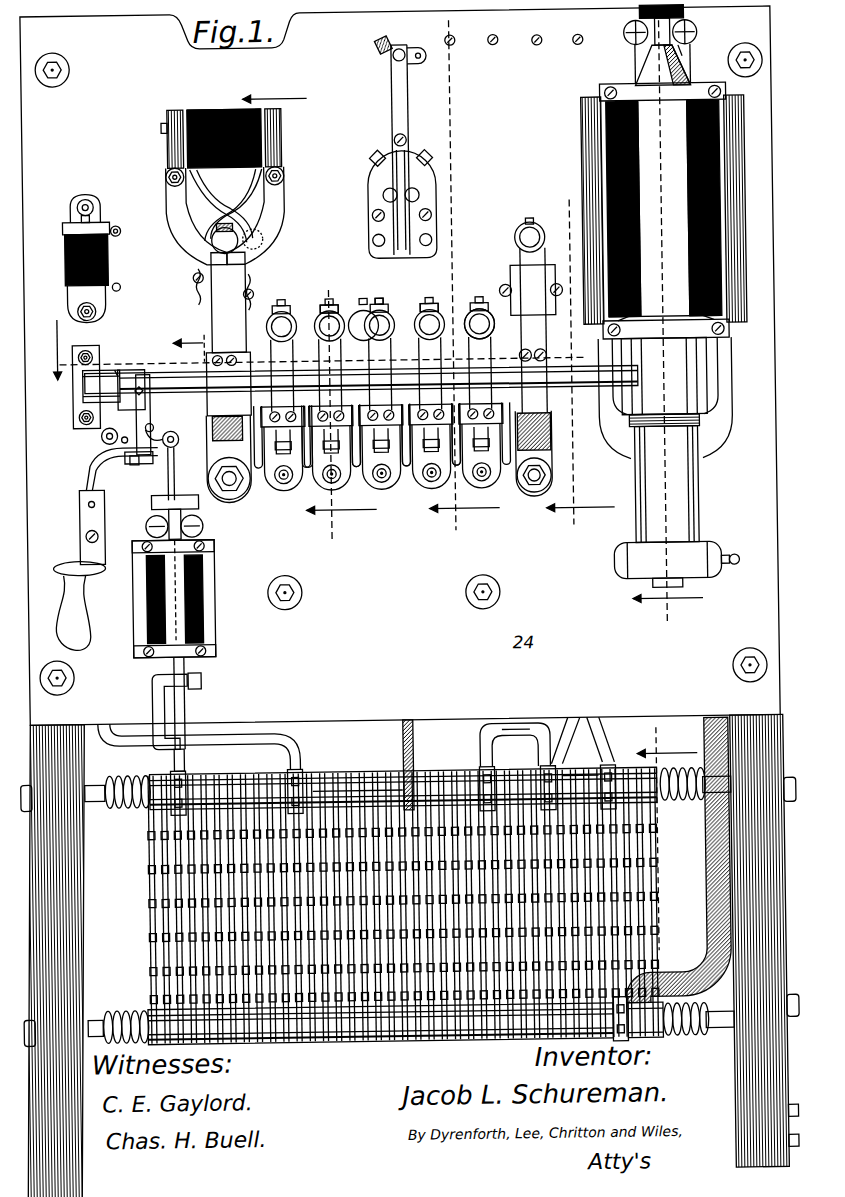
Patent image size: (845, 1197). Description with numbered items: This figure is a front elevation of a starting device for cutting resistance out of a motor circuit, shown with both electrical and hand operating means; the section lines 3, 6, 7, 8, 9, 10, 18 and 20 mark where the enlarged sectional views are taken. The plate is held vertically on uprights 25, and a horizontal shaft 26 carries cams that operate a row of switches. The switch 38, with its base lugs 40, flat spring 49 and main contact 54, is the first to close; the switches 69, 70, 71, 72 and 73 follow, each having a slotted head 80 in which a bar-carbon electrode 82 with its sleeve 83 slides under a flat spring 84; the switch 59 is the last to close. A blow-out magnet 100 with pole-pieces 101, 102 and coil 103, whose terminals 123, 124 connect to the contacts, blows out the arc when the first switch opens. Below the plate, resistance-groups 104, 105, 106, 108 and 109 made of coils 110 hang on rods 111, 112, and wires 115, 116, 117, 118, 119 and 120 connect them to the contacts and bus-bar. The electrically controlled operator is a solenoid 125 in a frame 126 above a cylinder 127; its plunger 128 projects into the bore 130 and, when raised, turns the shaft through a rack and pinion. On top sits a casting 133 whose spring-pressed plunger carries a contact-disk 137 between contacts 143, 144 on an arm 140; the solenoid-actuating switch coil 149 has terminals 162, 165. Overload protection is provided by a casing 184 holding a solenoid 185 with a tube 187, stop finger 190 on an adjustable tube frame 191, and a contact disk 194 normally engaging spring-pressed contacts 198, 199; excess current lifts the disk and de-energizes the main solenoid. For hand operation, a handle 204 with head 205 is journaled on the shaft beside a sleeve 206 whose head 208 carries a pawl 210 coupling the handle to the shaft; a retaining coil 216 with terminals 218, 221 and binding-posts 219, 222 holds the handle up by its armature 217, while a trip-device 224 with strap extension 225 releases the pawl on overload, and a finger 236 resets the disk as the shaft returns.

The section line 3 is at (664, 332).
The section line 6 is at (462, 287).
The section line 7 is at (578, 374).
The section line 8 is at (340, 424).
The section line 9 is at (667, 742).
The section line 10 is at (48, 350).
The section line 18 is at (274, 81).
The irregular section line 20 is at (193, 329).
The uprights 25 is at (74, 902).
The shaft 26 is at (602, 395).
The switch 38 is at (228, 384).
The lugs 40 is at (218, 500).
The flat spring 49 is at (228, 288).
The main contact 54 is at (262, 292).
The switch 59 is at (536, 498).
The switch 69 is at (284, 492).
The switch 70 is at (336, 492).
The switch 71 is at (386, 492).
The switch 72 is at (436, 492).
The switch 73 is at (486, 492).
The slotted head 80 is at (480, 305).
The electrode 82 is at (333, 304).
The sleeve 83 is at (367, 298).
The flat spring 84 is at (360, 382).
The blow-out magnet 100 is at (220, 123).
The pole-piece 101 is at (185, 230).
The pole-piece 102 is at (272, 222).
The coil 103 is at (236, 107).
The resistance-group 104 is at (630, 774).
The resistance-group 105 is at (568, 772).
The resistance-group 106 is at (510, 731).
The resistance-group 108 is at (368, 778).
The resistance-group 109 is at (226, 784).
The coils 110 is at (160, 852).
The rod 111 is at (126, 775).
The rod 112 is at (123, 1006).
The wire 115 is at (598, 738).
The wire 116 is at (566, 748).
The wire 117 is at (480, 748).
The wire 118 is at (400, 748).
The wire 119 is at (286, 746).
The wire 120 is at (184, 756).
The terminal 123 is at (235, 205).
The terminal 124 is at (221, 206).
The solenoid 125 is at (640, 322).
The frame 126 is at (664, 208).
The cylinder 127 is at (675, 506).
The plunger 128 is at (672, 384).
The bore 130 is at (612, 138).
The casting 133 is at (655, 68).
The contact-disk 137 is at (648, 15).
The arm 140 is at (690, 58).
The contact 143 is at (636, 30).
The contact 144 is at (705, 30).
The coil 149 is at (432, 186).
The terminal 162 is at (442, 145).
The terminal 165 is at (380, 152).
The casing 184 is at (170, 588).
The solenoid 185 is at (146, 633).
The tube 187 is at (184, 672).
The finger 190 is at (182, 728).
The tube frame 191 is at (198, 686).
The contact disk 194 is at (170, 470).
The spring-pressed contact 198 is at (152, 500).
The spring-pressed contact 199 is at (178, 446).
The handle 204 is at (62, 560).
The head 205 is at (128, 366).
The sleeve 206 is at (146, 371).
The head 208 is at (112, 444).
The pawl 210 is at (132, 460).
The retaining coil 216 is at (70, 250).
The armature 217 is at (81, 495).
The terminal 218 is at (112, 280).
The binding-post 219 is at (126, 284).
The terminal 221 is at (104, 214).
The binding-post 222 is at (126, 226).
The trip-device 224 is at (76, 412).
The strap extension 225 is at (118, 366).
The finger 236 is at (155, 420).